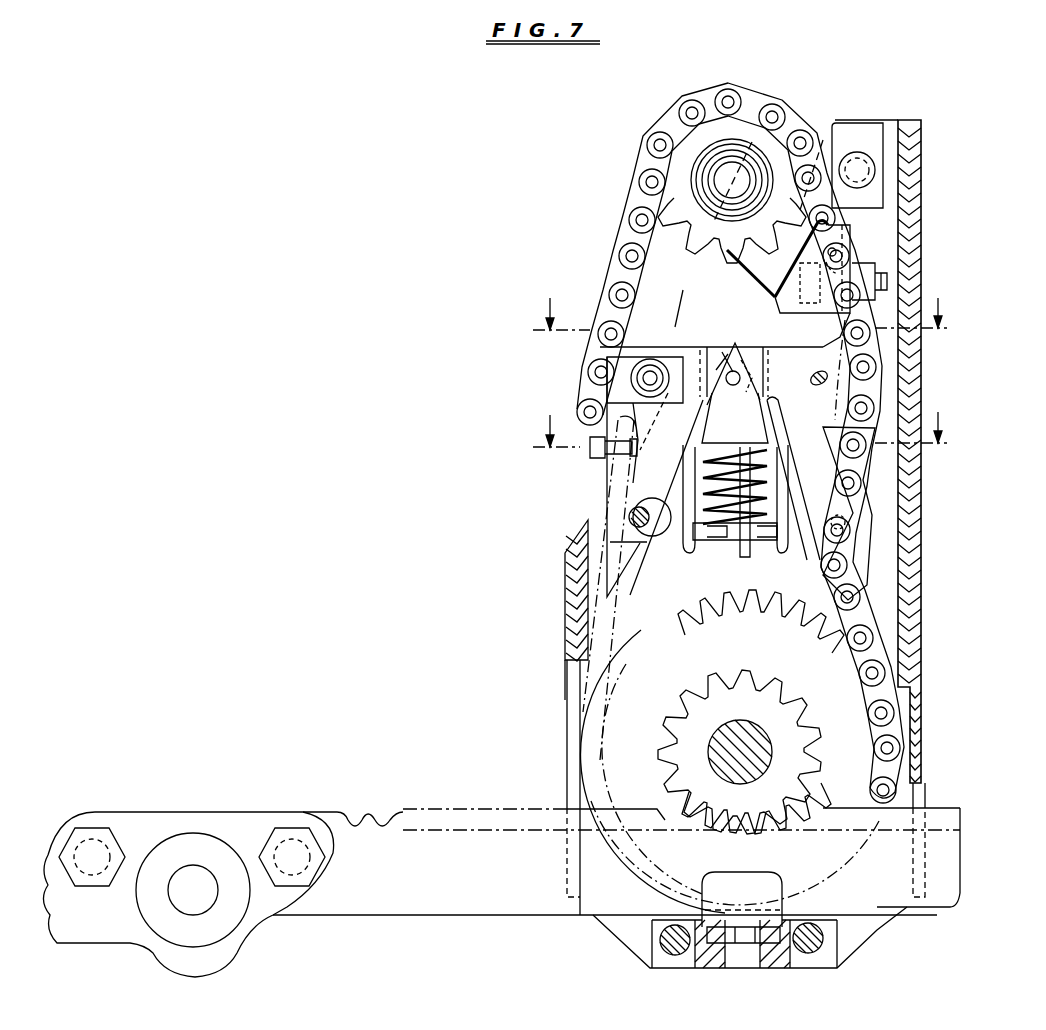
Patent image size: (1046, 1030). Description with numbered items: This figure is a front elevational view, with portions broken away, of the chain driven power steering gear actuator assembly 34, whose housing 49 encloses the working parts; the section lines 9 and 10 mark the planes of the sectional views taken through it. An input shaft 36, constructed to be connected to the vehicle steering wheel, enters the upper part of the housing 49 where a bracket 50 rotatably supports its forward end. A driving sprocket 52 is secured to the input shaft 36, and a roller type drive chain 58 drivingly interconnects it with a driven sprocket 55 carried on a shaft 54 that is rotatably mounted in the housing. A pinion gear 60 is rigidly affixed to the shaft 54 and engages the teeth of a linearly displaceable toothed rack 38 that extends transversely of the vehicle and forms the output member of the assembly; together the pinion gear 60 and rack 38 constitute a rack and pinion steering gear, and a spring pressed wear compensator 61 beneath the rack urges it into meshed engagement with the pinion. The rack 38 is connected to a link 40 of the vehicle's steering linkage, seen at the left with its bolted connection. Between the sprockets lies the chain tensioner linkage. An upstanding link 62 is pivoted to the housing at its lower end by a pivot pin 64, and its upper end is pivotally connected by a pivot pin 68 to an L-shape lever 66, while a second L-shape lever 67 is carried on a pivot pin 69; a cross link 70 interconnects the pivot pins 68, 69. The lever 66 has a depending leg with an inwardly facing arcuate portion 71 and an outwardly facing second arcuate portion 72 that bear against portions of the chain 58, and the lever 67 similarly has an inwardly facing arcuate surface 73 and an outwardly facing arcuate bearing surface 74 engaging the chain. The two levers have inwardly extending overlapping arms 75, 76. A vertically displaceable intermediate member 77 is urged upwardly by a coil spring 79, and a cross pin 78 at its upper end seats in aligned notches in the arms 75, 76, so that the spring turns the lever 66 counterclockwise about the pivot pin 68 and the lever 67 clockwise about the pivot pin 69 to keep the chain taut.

The section line 9- 9 is at (740, 300).
The right-hand frame side rail 10 is at (743, 416).
The power steering gear actuator assembly 34 is at (548, 540).
The input shaft 36 is at (748, 194).
The toothed rack 38 is at (445, 903).
The link 40 is at (128, 930).
The housing 49 is at (556, 614).
The bracket 50 is at (818, 142).
The driving sprocket 52 is at (748, 133).
The shaft 54 is at (725, 768).
The driven sprocket 55 is at (712, 606).
The roller type drive chain 58 is at (645, 160).
The pinion gear 60 is at (752, 670).
The spring pressed wear compensator 61 is at (748, 886).
The upstanding link 62 is at (615, 487).
The pivot pin 64 is at (645, 507).
The L-shape lever 66 is at (701, 362).
The L-shape lever 67 is at (838, 343).
The pivot pin 68 is at (650, 358).
The pivot pin 69 is at (806, 384).
The cross link 70 is at (691, 295).
The arcuate portion 71 is at (605, 578).
The second arcuate portion 72 is at (607, 352).
The inwardly facing arcuate surface 73 is at (866, 578).
The outwardly facing arcuate bearing surface 74 is at (862, 440).
The arm 75 is at (717, 347).
The arm 76 is at (770, 352).
The intermediate member 77 is at (749, 430).
The cross pin 78 is at (748, 347).
The coil spring 79 is at (795, 518).